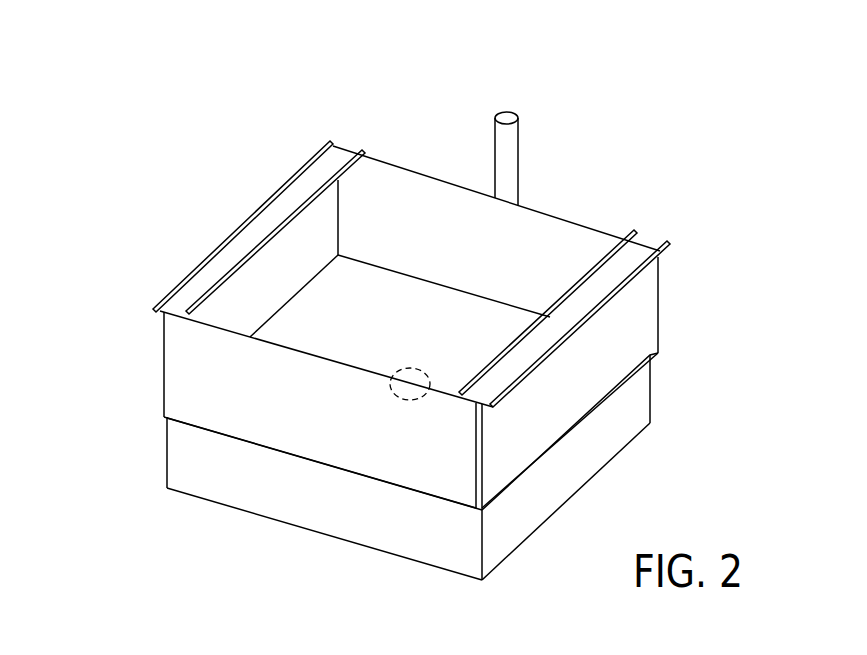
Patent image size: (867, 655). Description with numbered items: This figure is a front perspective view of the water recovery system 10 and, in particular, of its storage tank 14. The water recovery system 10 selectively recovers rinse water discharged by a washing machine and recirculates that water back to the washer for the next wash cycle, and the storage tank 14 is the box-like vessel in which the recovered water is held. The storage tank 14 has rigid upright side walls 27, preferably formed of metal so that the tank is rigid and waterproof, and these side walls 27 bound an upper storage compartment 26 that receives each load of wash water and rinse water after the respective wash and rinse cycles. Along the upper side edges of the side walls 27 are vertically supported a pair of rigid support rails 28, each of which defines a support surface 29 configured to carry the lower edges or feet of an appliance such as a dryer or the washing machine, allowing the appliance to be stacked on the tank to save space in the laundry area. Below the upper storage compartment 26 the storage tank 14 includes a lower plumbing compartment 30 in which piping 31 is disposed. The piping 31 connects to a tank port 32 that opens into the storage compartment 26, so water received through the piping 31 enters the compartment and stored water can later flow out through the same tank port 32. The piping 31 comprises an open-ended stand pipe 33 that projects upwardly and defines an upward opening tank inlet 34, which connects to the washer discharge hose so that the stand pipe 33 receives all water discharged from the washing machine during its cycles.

The water recovery system 10 is at (115, 185).
The storage tank 14 is at (658, 332).
The upper storage compartment 26 is at (558, 243).
The side walls 27 is at (398, 192).
The support rails 28 is at (270, 213).
The support surface 29 is at (215, 267).
The lower plumbing compartment 30 is at (602, 447).
The piping 31 is at (523, 143).
The tank port 32 is at (410, 382).
The stand pipe 33 is at (505, 178).
The tank inlet 34 is at (503, 113).